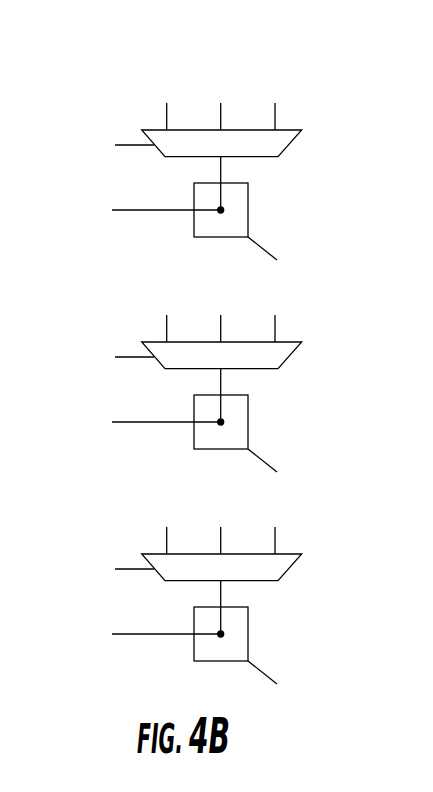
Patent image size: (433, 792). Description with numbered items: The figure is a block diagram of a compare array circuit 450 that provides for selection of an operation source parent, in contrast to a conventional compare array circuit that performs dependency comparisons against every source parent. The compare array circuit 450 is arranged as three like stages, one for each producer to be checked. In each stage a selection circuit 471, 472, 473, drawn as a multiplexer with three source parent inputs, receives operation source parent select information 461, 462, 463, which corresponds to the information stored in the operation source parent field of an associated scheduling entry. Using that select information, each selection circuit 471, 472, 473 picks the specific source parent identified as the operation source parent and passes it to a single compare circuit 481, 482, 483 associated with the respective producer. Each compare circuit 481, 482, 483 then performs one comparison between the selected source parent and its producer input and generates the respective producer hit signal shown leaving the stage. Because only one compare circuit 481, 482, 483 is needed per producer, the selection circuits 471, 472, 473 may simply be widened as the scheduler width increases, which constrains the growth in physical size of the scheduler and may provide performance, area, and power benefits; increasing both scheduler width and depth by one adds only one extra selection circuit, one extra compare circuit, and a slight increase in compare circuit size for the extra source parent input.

The compare array circuit 450 is at (320, 90).
The operation source parent select information 461 is at (73, 127).
The operation source parent select information 462 is at (73, 339).
The operation source parent select information 463 is at (73, 551).
The selection circuit 471 is at (287, 143).
The selection circuit 472 is at (287, 355).
The selection circuit 473 is at (287, 567).
The compare circuit 481 is at (248, 183).
The compare circuit 482 is at (248, 395).
The compare circuit 483 is at (248, 607).